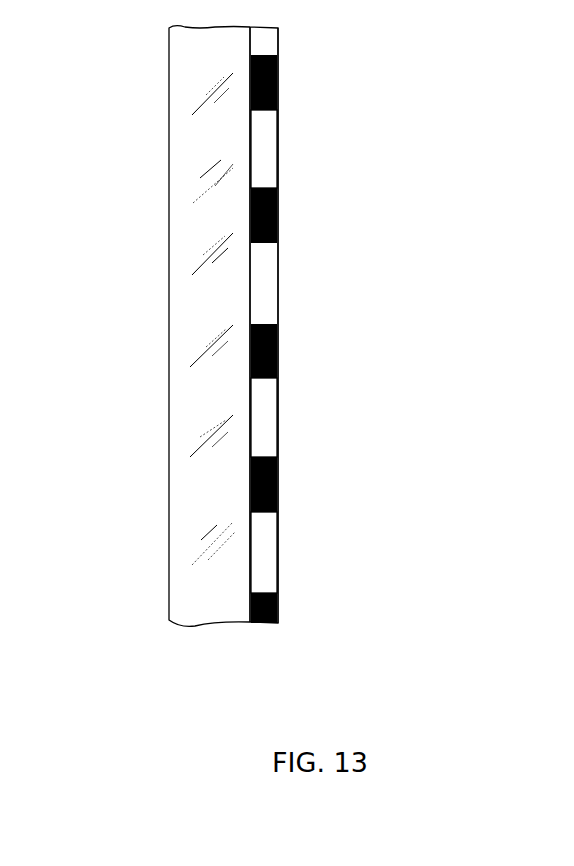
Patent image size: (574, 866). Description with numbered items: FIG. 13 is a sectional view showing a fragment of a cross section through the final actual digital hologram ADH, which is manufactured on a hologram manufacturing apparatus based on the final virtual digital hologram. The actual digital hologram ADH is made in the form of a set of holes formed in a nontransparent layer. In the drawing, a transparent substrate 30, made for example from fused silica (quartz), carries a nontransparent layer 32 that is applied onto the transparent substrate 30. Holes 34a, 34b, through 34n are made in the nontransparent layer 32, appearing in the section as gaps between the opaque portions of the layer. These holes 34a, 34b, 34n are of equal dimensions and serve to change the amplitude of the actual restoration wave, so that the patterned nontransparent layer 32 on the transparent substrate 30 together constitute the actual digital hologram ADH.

The transparent substrate 30 is at (183, 320).
The nontransparent layer 32 is at (249, 86).
The hole 34n is at (268, 152).
The hole 34b is at (270, 433).
The hole 34a is at (270, 555).
The actual digital hologram ADH is at (280, 286).